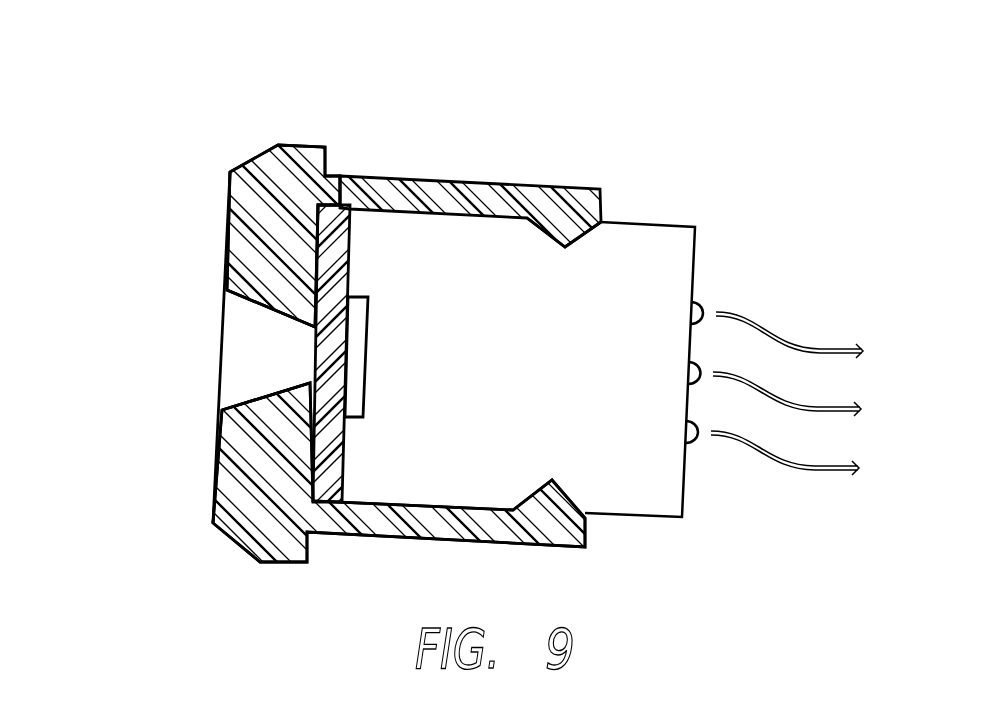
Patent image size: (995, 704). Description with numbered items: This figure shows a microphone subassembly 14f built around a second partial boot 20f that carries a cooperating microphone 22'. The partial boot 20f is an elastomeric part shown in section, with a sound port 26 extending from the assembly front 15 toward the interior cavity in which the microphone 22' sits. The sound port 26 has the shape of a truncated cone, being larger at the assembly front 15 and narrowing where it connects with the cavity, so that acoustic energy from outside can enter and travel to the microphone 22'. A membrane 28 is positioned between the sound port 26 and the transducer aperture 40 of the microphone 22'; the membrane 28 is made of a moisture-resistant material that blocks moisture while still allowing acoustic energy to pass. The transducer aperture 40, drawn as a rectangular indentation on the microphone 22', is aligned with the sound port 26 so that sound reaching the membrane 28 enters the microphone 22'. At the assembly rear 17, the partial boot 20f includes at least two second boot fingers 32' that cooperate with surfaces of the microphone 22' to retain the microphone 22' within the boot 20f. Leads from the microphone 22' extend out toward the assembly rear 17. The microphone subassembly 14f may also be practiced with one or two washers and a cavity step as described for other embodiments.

The microphone subassembly 14f is at (148, 141).
The second partial boot 20f is at (300, 170).
The membrane 28 is at (337, 215).
The microphone 22' is at (397, 314).
The second boot fingers 32' is at (582, 290).
The assembly front 15 is at (227, 232).
The sound port 26 is at (240, 358).
The transducer aperture 40 is at (355, 352).
The assembly rear 17 is at (683, 485).